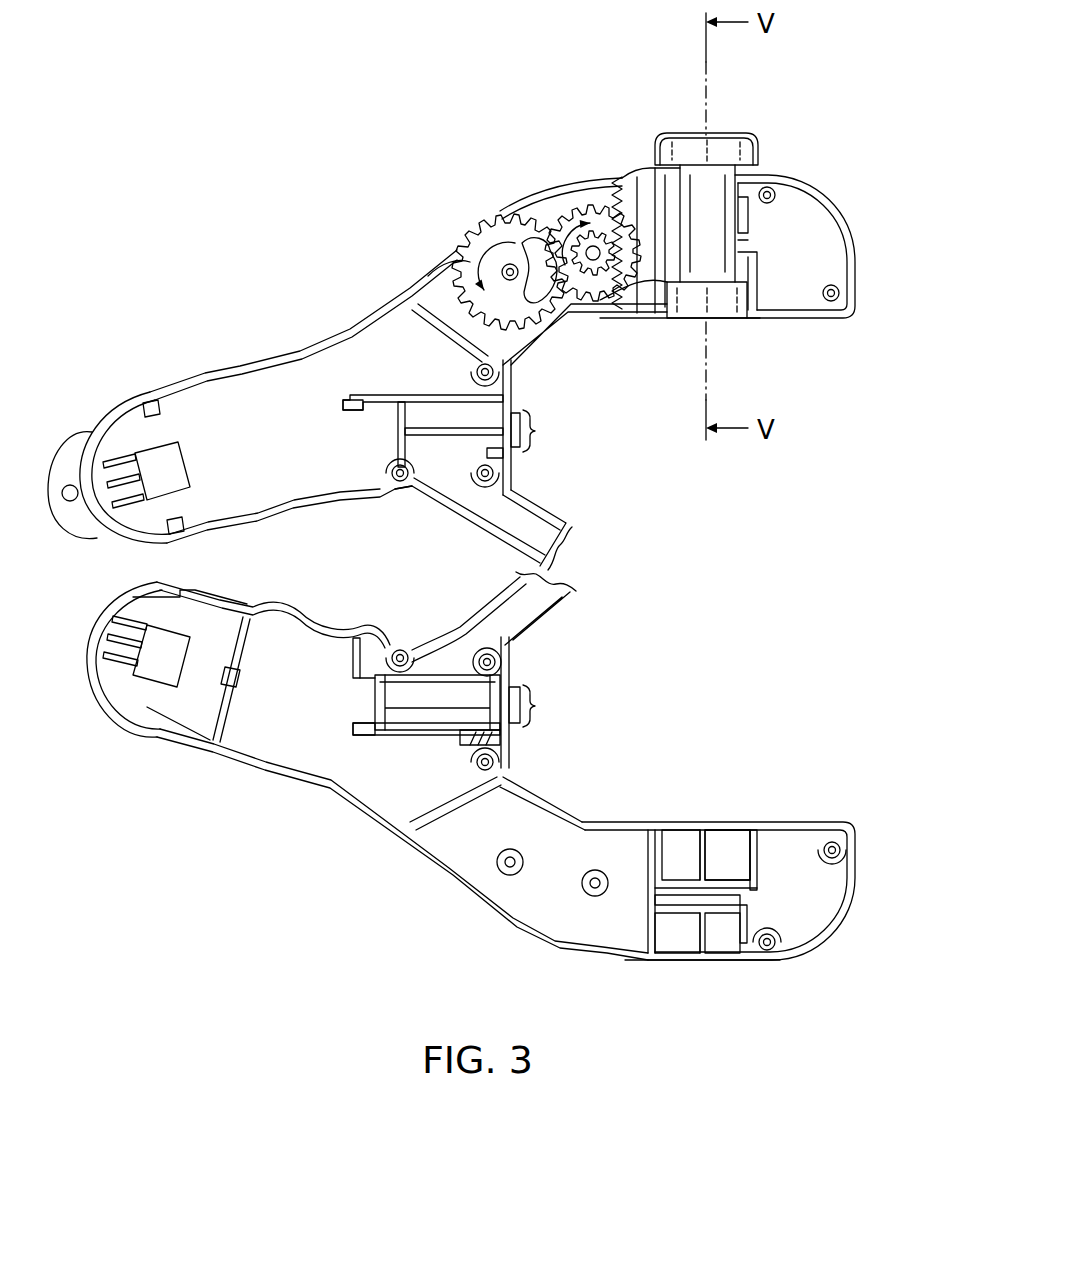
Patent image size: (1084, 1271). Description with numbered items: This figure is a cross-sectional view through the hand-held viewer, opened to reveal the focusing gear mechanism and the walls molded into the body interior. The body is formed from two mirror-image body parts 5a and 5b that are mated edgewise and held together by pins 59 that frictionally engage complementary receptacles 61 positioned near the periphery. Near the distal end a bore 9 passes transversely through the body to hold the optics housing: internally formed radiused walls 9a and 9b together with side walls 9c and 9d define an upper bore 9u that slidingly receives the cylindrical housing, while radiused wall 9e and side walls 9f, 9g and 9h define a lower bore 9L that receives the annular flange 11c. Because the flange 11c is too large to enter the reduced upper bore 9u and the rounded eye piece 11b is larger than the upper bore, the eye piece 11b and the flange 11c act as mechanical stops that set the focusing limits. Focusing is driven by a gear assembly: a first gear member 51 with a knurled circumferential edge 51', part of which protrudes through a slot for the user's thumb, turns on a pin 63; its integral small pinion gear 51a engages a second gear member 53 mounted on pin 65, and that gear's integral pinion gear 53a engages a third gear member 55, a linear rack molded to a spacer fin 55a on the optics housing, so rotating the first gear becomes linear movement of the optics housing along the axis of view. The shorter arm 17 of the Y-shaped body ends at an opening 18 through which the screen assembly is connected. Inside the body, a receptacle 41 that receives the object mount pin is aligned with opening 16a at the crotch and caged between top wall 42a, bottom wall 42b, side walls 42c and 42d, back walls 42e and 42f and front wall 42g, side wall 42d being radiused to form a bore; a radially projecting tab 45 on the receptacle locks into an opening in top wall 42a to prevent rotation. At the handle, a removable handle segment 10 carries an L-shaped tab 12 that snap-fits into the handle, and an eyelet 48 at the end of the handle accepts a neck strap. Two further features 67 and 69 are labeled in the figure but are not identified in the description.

The body part 5a is at (368, 316).
The body part 5b is at (395, 828).
The bore 9 is at (718, 922).
The radiused wall 9a is at (728, 963).
The radiused wall 9b is at (738, 900).
The side wall 9c is at (700, 930).
The side wall 9d is at (750, 220).
The radiused wall 9e is at (752, 247).
The side wall 9f is at (757, 270).
The side wall 9g is at (705, 830).
The side wall 9h is at (668, 835).
The lower bore 9L is at (750, 276).
The upper bore 9u is at (668, 925).
The handle segment 10 is at (180, 722).
The eye piece 11b is at (733, 150).
The annular flange 11c is at (726, 300).
The L-shaped tab 12 is at (235, 680).
The opening 16a is at (538, 431).
The arm 17 is at (552, 518).
The opening 18 is at (580, 548).
The receptacle 41 is at (462, 700).
The top wall 42a is at (440, 395).
The bottom wall 42b is at (490, 455).
The side wall 42c is at (398, 440).
The side wall 42d is at (395, 487).
The back wall 42e is at (350, 403).
The back wall 42f is at (372, 686).
The front wall 42g is at (510, 385).
The radially projecting tab 45 is at (465, 741).
The eyelet 48 is at (70, 483).
The first gear member 51 is at (510, 251).
The knurled circumferential edge 51' is at (453, 221).
The small pinion gear 51a is at (535, 248).
The second gear member 53 is at (598, 225).
The small pinion gear 53a is at (600, 266).
The third gear member 55 is at (637, 185).
The spacer fin 55a is at (640, 283).
The pins 59 is at (772, 190).
The complementary receptacles 61 is at (400, 650).
The pin 63 is at (455, 263).
The pin 65 is at (585, 272).
The boss 67 is at (505, 868).
The boss 69 is at (590, 893).